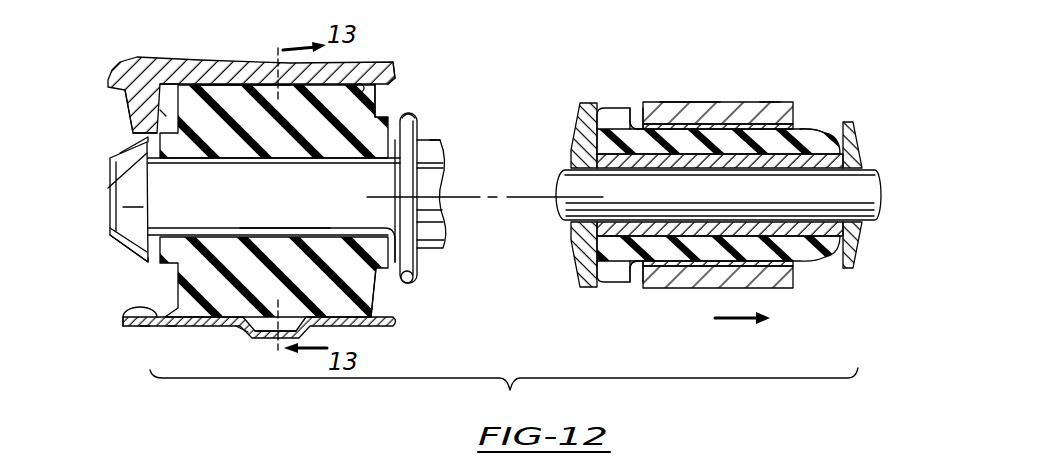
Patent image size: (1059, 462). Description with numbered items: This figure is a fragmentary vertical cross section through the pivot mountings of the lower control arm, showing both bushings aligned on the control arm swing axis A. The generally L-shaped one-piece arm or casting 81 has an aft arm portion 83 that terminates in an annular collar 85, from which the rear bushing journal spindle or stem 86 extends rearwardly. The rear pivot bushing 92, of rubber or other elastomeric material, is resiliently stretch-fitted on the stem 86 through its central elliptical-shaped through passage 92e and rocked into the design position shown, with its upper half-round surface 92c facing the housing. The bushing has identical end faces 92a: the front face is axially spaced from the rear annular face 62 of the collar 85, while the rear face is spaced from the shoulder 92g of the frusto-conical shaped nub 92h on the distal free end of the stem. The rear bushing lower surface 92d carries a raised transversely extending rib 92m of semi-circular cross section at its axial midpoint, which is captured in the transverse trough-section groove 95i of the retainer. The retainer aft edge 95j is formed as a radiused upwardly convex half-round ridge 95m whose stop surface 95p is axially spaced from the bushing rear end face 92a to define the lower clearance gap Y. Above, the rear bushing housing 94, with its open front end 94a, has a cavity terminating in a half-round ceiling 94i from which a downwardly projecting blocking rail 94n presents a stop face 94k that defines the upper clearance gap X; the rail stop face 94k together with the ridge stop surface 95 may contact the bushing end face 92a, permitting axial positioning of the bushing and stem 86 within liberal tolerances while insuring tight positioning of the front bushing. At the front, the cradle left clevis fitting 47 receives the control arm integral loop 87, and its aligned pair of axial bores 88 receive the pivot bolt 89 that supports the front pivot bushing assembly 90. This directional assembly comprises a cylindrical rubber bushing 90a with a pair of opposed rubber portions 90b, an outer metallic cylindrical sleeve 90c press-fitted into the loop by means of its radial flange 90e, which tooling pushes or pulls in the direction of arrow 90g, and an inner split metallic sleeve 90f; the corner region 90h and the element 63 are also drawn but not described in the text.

The rear bushing housing 94 is at (113, 60).
The stop face 94k is at (165, 100).
The blocking rail 94n is at (137, 131).
The half-round ceiling 94i is at (373, 117).
The open front end 94a is at (390, 83).
The axial upper clearance gap X is at (167, 113).
The rear pivot bushing 92 is at (388, 302).
The upper half-round surface 92c is at (240, 86).
The rear bushing lower surface 92d is at (368, 322).
The central elliptical-shaped through passage 92e is at (287, 230).
The shoulder 92g is at (113, 185).
The frusto-conical shaped nub 92h is at (108, 222).
The end faces 92a is at (140, 145).
The raised transversely extending rib 92m is at (277, 335).
The rear bushing journal spindle or stem 86 is at (215, 204).
The ridge stop surface 95 is at (404, 315).
The stop surface 95p is at (158, 318).
The retainer aft edge 95j is at (127, 327).
The half-round ridge 95m is at (145, 332).
The transverse trough-section groove 95i is at (247, 328).
The axial lower clearance gap Y is at (172, 328).
The annular collar 85 is at (416, 128).
The rear annular face 62 is at (402, 112).
The aft arm portion 83 is at (440, 247).
The control arm swing axis A is at (460, 192).
The one-piece arm or casting 81 is at (452, 124).
The aligned pair of axial bores 88 is at (878, 170).
The pivot bolt 89 is at (560, 190).
The front pivot bushing assembly 90 is at (598, 318).
The cylindrical rubber bushing 90a is at (825, 115).
The opposed rubber portions 90b is at (610, 112).
The outer metallic cylindrical sleeve 90c is at (720, 117).
The radial flange 90e is at (635, 112).
The inner split metallic sleeve 90f is at (597, 232).
The arrow 90g is at (745, 322).
The lip corner 90h is at (640, 112).
The control arm integral loop 87 is at (687, 102).
The cradle left clevis fitting 47 is at (568, 113).
The retaining ring 63 is at (860, 255).